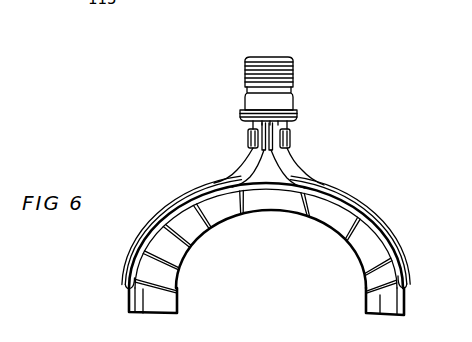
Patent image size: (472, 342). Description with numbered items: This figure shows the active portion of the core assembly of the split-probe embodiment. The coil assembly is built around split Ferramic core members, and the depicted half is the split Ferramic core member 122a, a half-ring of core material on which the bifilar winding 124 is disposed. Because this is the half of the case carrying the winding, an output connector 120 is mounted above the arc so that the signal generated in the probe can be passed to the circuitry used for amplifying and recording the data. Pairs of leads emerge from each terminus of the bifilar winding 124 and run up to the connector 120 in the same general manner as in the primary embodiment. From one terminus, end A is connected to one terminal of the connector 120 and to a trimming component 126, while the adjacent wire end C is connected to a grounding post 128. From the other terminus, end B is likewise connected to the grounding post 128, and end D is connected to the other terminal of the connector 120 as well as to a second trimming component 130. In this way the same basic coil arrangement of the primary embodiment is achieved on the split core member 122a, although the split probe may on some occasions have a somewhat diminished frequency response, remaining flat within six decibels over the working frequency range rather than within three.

The connector 120 is at (286, 57).
The grounding post 128 is at (267, 112).
The trimming component 126 is at (248, 137).
The trimming component 130 is at (291, 139).
The bifilar winding 124 is at (367, 303).
The split Ferramic core member 122a is at (134, 302).
The end A is at (250, 160).
The end B is at (286, 176).
The end C is at (252, 173).
The end D is at (288, 161).